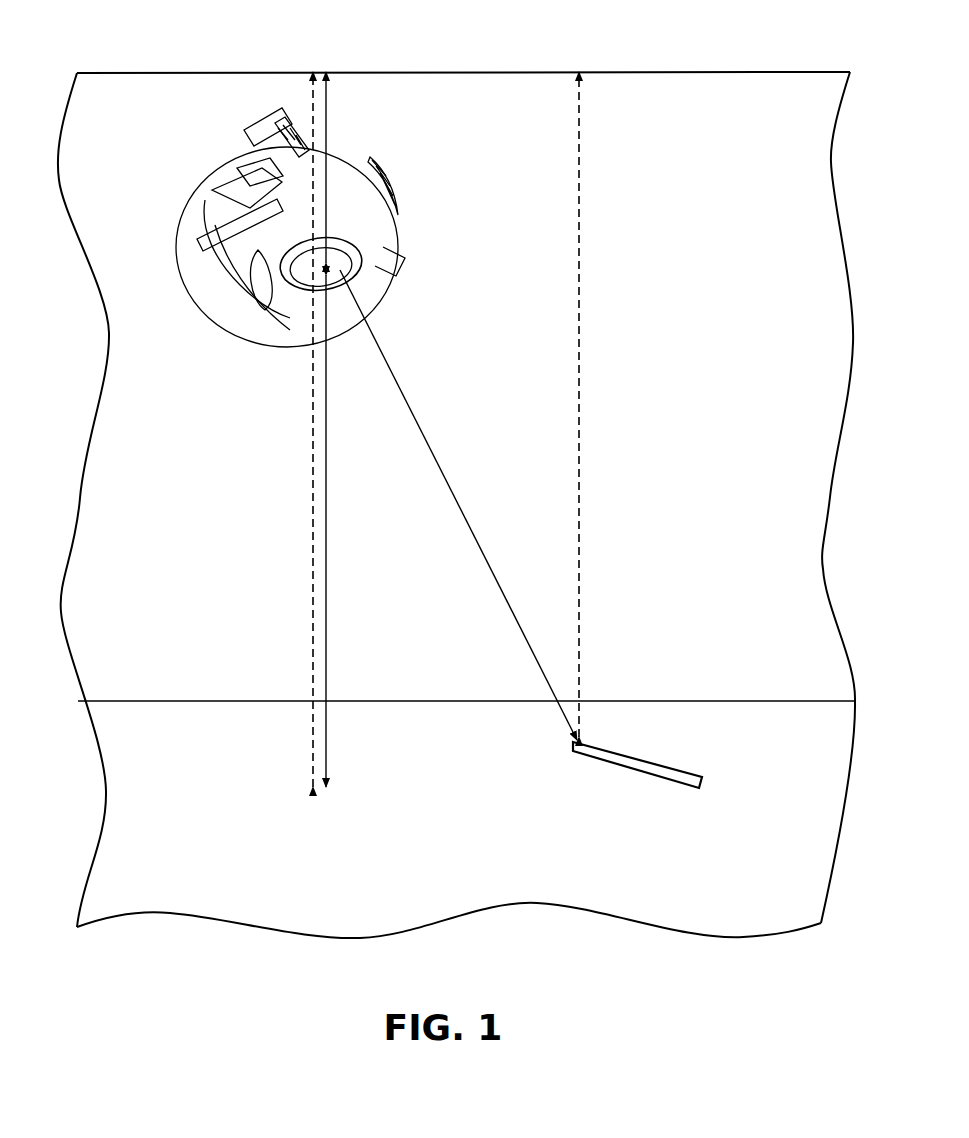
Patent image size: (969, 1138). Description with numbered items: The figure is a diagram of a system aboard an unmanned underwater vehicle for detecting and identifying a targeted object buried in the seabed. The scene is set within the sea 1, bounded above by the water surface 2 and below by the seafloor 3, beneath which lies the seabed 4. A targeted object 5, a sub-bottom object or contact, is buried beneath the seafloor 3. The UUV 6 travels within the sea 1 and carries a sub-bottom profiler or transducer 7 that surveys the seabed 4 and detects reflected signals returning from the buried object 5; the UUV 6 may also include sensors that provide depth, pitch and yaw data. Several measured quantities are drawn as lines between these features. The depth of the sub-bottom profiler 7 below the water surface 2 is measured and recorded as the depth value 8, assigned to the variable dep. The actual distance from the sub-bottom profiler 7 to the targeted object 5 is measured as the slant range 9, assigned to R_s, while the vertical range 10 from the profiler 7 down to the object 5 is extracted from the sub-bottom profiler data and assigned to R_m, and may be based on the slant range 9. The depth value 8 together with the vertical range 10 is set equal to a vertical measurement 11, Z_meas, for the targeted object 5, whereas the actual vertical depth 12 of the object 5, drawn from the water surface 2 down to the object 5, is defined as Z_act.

The sea 1 is at (100, 428).
The water surface 2 is at (157, 72).
The seafloor 3 is at (128, 701).
The seabed 4 is at (111, 801).
The targeted object 5 is at (673, 782).
The unmanned underwater vehicle (UUV) 6 is at (350, 153).
The sub-bottom profiler (transducer) 7 is at (345, 258).
The depth value 8 is at (327, 115).
The slant range 9 is at (400, 393).
The vertical range 10 is at (326, 625).
The vertical measurement 11 is at (313, 532).
The actual vertical depth 12 is at (579, 445).